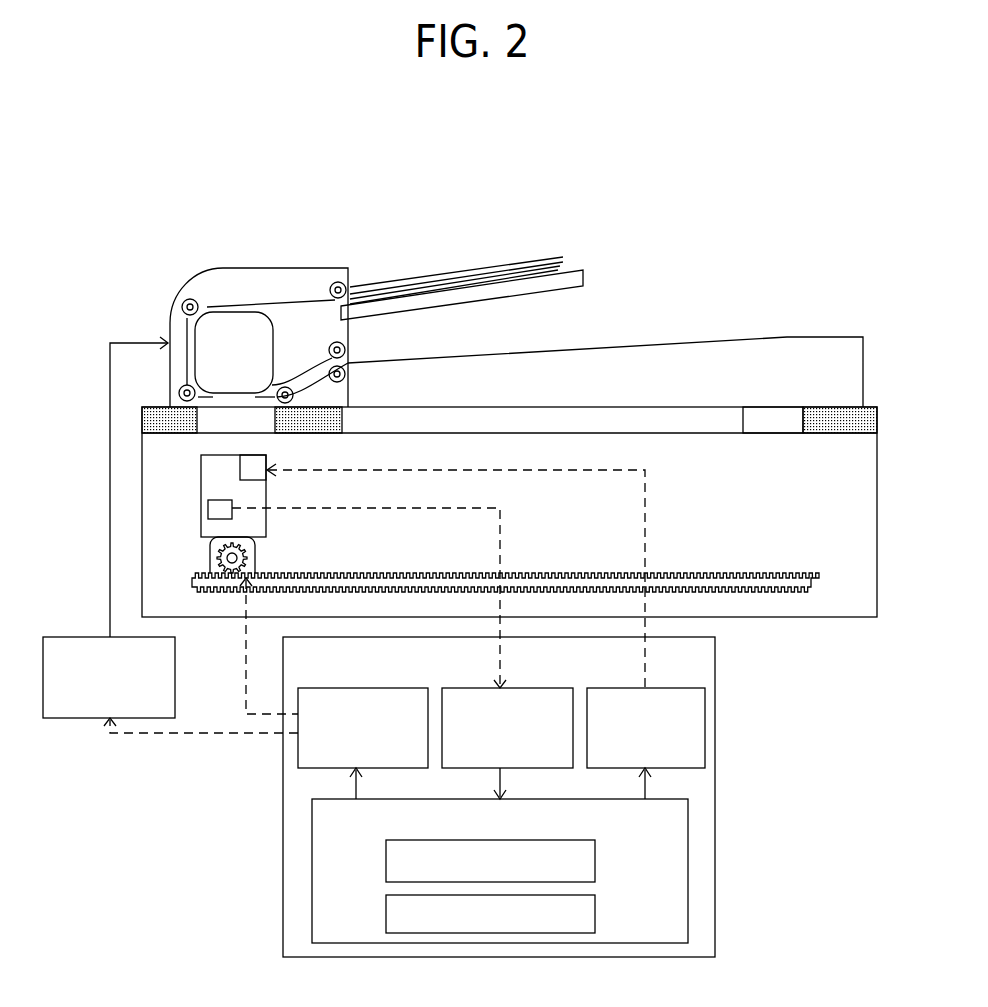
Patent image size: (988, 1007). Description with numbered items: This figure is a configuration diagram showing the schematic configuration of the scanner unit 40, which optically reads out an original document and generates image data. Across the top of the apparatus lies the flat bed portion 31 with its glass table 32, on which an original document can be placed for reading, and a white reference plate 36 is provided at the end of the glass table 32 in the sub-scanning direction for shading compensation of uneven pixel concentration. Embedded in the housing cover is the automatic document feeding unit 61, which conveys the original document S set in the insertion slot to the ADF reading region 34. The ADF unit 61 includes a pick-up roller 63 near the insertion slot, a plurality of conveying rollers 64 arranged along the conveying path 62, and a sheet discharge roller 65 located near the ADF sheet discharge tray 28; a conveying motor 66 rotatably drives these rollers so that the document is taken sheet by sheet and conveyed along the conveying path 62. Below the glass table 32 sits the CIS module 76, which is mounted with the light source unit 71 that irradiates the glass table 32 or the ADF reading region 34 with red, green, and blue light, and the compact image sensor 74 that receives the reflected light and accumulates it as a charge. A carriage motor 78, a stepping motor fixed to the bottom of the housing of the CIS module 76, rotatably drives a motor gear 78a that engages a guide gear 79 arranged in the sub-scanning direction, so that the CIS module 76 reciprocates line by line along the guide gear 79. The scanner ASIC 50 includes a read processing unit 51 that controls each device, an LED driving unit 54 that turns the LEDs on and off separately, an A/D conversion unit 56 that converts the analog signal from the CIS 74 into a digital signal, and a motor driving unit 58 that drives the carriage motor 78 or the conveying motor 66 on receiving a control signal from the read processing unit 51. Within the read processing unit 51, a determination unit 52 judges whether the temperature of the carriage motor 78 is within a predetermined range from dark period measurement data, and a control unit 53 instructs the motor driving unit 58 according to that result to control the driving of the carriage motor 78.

The scanner unit 40 is at (165, 168).
The ADF sheet discharge tray 28 is at (725, 340).
The flat bed portion 31 is at (485, 393).
The glass table 32 is at (625, 410).
The white reference plate 36 is at (772, 410).
The ADF reading region 34 is at (212, 432).
The automatic document feeding unit 61 is at (279, 271).
The conveying path 62 is at (238, 307).
The pick-up roller 63 is at (345, 280).
The conveying rollers 64 is at (182, 305).
The sheet discharge roller 65 is at (350, 345).
The document S is at (455, 266).
The conveying motor 66 is at (175, 671).
The light source unit 71 is at (267, 466).
The compact image sensor 74 is at (208, 512).
The CIS module 76 is at (267, 497).
The carriage motor 78 is at (255, 560).
The motor gear 78a is at (215, 560).
The guide gear 79 is at (728, 575).
The scanner ASIC 50 is at (715, 715).
The read processing unit 51 is at (688, 858).
The determination unit 52 is at (595, 862).
The control unit 53 is at (595, 915).
The LED driving unit 54 is at (664, 686).
The A/D conversion unit 56 is at (527, 686).
The motor driving unit 58 is at (352, 686).